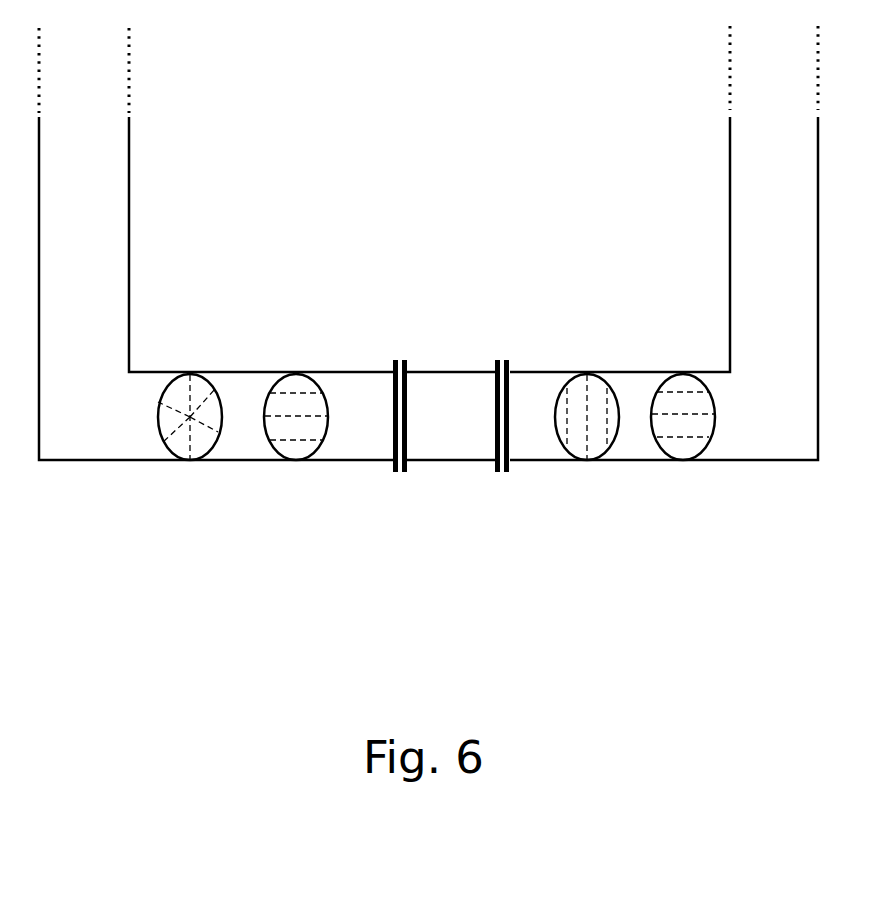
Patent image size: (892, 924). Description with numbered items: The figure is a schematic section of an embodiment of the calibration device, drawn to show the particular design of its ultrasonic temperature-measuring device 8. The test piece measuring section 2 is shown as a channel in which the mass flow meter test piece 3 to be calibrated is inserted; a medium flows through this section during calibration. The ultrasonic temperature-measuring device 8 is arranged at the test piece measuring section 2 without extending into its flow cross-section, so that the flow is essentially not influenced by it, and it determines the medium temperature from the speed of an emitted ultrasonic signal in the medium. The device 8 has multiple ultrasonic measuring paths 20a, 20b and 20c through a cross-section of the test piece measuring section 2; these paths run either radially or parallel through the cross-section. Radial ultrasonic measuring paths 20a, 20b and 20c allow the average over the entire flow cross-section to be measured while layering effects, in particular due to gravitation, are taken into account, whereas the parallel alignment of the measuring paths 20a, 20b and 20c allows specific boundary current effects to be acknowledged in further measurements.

The test piece measuring section 2 is at (80, 461).
The mass flow meter test piece 3 is at (445, 461).
The ultrasonic temperature-measuring device 8 is at (202, 376).
The ultrasonic measuring path 20a is at (190, 417).
The ultrasonic measuring path 20b is at (178, 427).
The ultrasonic measuring path 20c is at (212, 428).